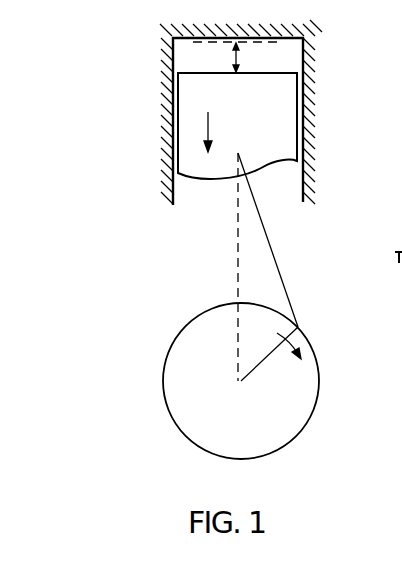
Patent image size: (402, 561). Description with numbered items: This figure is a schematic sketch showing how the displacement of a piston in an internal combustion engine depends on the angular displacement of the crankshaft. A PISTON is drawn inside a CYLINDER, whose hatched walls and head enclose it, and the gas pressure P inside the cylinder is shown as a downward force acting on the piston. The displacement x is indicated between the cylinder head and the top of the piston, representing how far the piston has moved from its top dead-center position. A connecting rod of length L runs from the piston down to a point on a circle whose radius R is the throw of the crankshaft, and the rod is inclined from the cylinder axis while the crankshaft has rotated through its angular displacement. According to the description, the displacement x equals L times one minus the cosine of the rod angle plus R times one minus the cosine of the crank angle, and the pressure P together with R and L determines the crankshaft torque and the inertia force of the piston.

The piston PISTON is at (178, 95).
The cylinder CYLINDER is at (173, 128).
The displacement of the piston x is at (238, 56).
The pressure P is at (207, 121).
The length of the connecting rod L is at (268, 240).
The throw of the crankshaft R is at (241, 381).